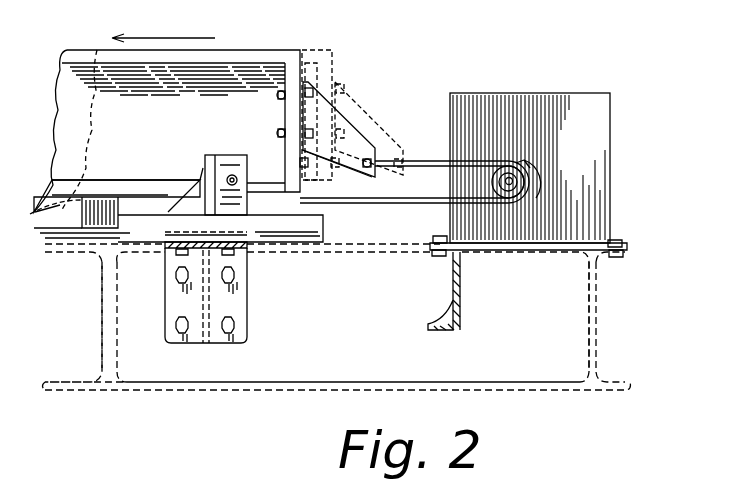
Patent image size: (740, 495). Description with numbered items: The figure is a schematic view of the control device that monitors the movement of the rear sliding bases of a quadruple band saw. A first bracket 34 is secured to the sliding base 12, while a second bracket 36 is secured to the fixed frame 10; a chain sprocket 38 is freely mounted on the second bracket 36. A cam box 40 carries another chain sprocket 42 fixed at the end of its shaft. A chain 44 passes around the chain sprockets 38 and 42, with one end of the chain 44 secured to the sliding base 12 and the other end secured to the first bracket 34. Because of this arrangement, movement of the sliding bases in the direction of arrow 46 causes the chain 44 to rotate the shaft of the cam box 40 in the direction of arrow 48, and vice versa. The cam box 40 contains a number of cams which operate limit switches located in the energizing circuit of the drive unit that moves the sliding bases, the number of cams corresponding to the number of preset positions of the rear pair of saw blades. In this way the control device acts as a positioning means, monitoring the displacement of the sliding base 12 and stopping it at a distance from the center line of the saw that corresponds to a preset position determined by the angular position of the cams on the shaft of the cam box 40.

The fixed frame 10 is at (589, 324).
The sliding base 12 is at (250, 54).
The first bracket 34 is at (357, 142).
The second bracket 36 is at (198, 185).
The chain sprocket 38 is at (236, 155).
The cam box 40 is at (600, 152).
The chain sprocket 42 is at (515, 179).
The chain 44 is at (398, 203).
The arrow 46 is at (192, 40).
The arrow 48 is at (536, 198).